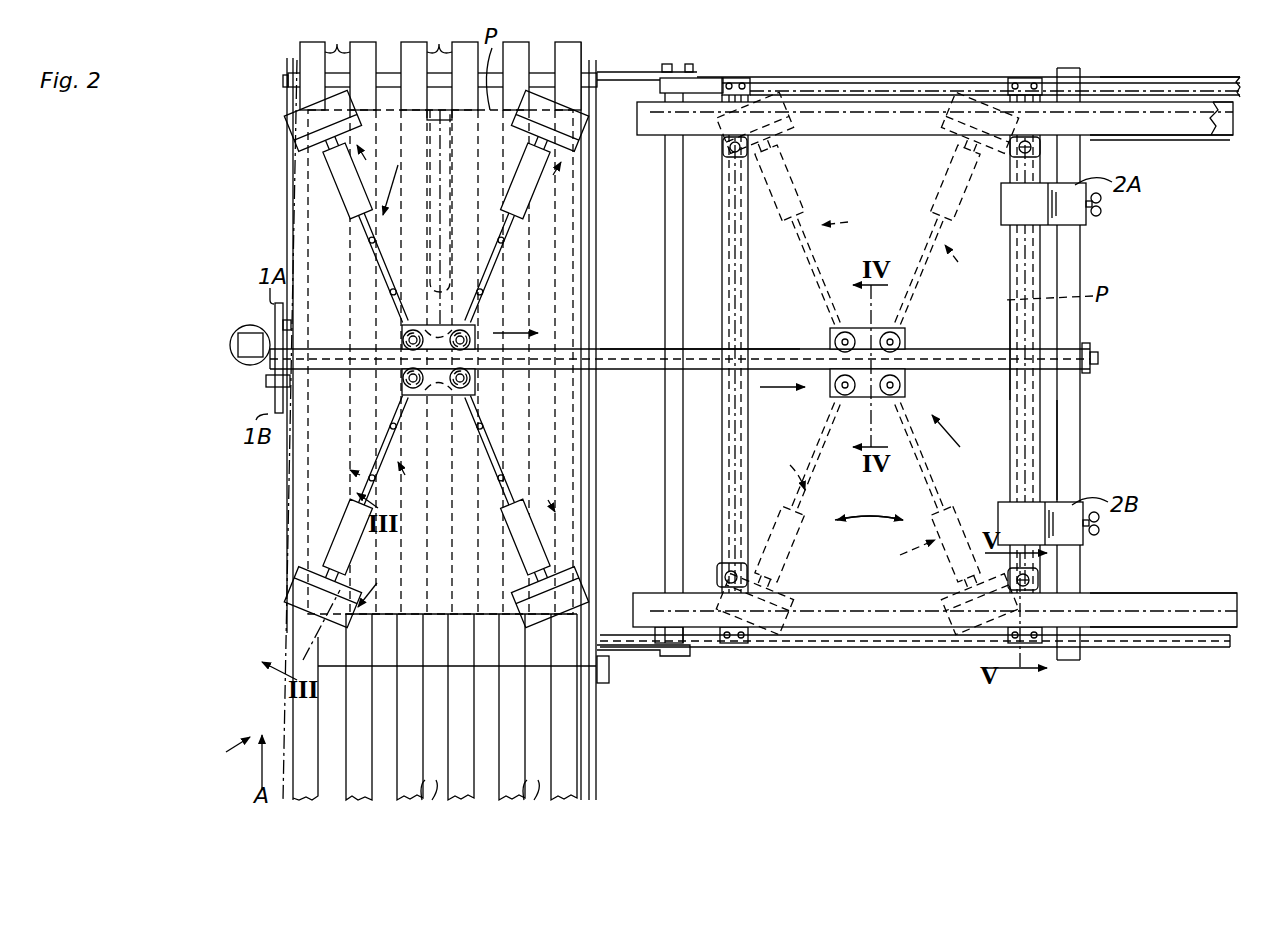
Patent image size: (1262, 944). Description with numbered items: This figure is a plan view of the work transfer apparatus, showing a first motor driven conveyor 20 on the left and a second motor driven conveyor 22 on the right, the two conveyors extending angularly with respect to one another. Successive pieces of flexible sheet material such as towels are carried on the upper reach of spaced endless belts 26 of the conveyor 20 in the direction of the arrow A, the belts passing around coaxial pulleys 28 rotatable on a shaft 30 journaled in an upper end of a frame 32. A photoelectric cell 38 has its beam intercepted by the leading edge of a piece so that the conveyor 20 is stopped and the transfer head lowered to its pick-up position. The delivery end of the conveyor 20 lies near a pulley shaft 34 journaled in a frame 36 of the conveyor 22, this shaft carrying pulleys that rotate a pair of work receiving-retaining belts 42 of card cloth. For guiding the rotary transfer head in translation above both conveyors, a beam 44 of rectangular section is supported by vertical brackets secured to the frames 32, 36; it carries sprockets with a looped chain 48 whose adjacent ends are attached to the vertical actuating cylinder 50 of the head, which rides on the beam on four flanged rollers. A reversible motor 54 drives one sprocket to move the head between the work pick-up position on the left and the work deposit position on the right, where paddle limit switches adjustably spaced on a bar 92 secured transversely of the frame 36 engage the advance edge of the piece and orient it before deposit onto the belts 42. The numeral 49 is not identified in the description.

The first motor driven conveyor 20 is at (220, 755).
The second motor driven conveyor 22 is at (1160, 75).
The endless belts 26 is at (444, 724).
The pulleys 28 is at (440, 62).
The shaft 30 is at (380, 73).
The frame 32 is at (287, 533).
The pulley shaft 34 is at (665, 483).
The frame 36 is at (905, 627).
The photoelectric cell 38 is at (440, 110).
The work receiving-retaining belts 42 is at (1232, 602).
The beam 44 is at (614, 349).
The looped chain 48 is at (636, 369).
The bar end 49 is at (1236, 128).
The vertical actuating cylinder 50 is at (438, 395).
The reversible motor 54 is at (252, 325).
The bar 92 is at (1080, 472).